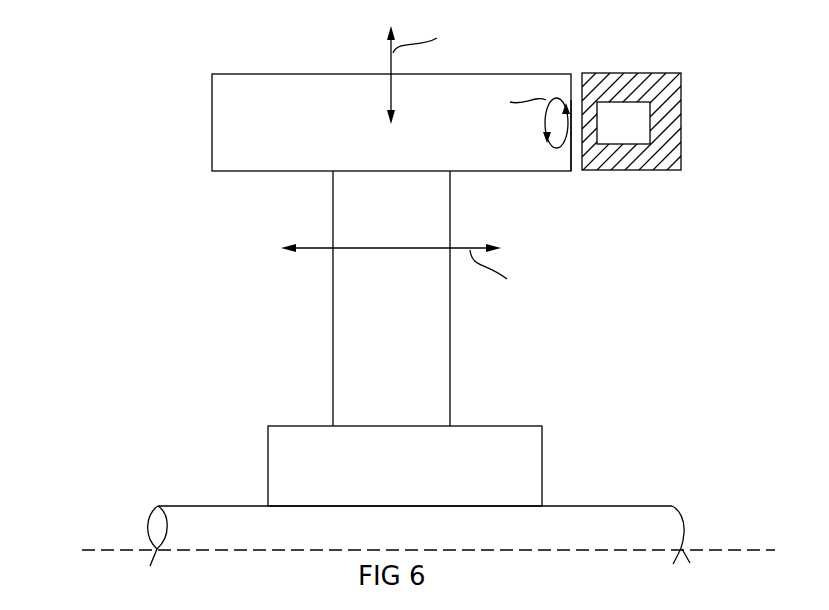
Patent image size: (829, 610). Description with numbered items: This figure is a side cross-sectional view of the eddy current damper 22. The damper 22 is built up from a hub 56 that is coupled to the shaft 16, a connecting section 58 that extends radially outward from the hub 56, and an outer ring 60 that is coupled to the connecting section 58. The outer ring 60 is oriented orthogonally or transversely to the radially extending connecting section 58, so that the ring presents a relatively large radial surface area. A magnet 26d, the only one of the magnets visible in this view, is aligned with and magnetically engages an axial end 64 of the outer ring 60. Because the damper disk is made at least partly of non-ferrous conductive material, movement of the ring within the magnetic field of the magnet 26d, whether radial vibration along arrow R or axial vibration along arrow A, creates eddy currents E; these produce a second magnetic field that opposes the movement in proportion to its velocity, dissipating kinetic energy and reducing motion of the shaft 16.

The shaft 16 is at (683, 523).
The eddy current damper 22 is at (133, 109).
The magnet 26d is at (682, 77).
The hub 56 is at (542, 467).
The connecting section 58 is at (357, 322).
The outer ring 60 is at (300, 74).
The axial end 64 is at (572, 171).